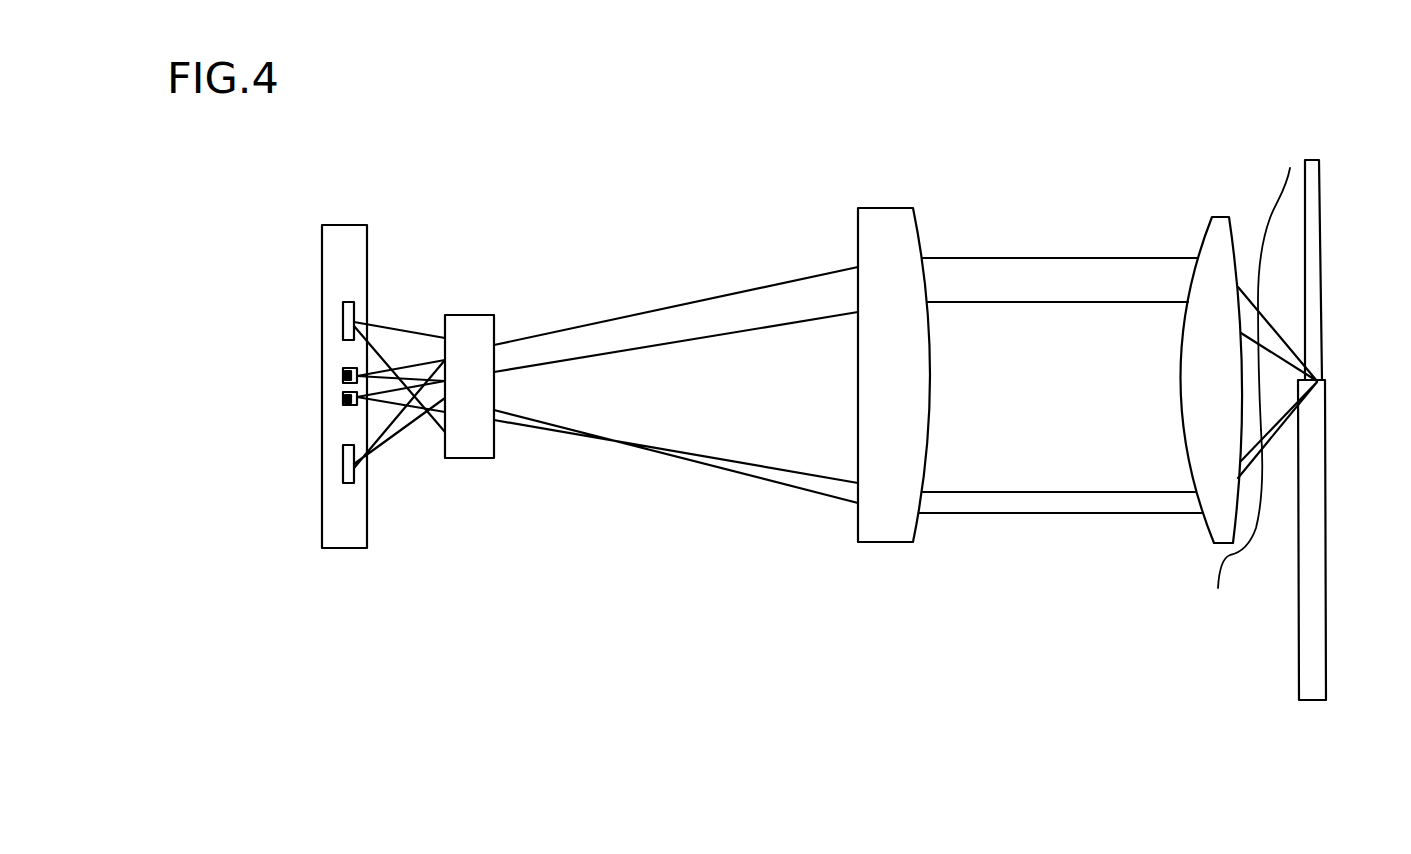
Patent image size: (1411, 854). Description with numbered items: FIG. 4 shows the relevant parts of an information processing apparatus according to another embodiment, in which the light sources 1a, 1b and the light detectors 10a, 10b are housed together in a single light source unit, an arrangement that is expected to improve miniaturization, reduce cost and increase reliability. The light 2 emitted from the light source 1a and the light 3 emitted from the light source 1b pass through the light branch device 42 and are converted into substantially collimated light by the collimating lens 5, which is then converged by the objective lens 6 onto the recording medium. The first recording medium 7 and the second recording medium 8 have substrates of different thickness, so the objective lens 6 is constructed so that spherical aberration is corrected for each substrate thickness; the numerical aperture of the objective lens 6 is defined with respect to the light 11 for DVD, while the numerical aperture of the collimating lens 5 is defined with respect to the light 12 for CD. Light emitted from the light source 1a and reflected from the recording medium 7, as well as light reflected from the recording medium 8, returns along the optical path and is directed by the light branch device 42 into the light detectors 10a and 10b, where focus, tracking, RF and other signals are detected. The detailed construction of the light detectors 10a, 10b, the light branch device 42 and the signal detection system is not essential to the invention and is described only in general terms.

The light source 1a is at (343, 376).
The light source 1b is at (343, 397).
The light 2 is at (395, 372).
The light 3 is at (395, 407).
The light detector 10a is at (347, 302).
The light detector 10b is at (350, 480).
The light branch device 42 is at (473, 322).
The collimating lens 5 is at (893, 223).
The objective lens 6 is at (1221, 221).
The first recording medium 7 is at (1312, 170).
The second recording medium 8 is at (1313, 693).
The light for DVD 11 is at (1277, 285).
The light for CD 12 is at (1231, 526).